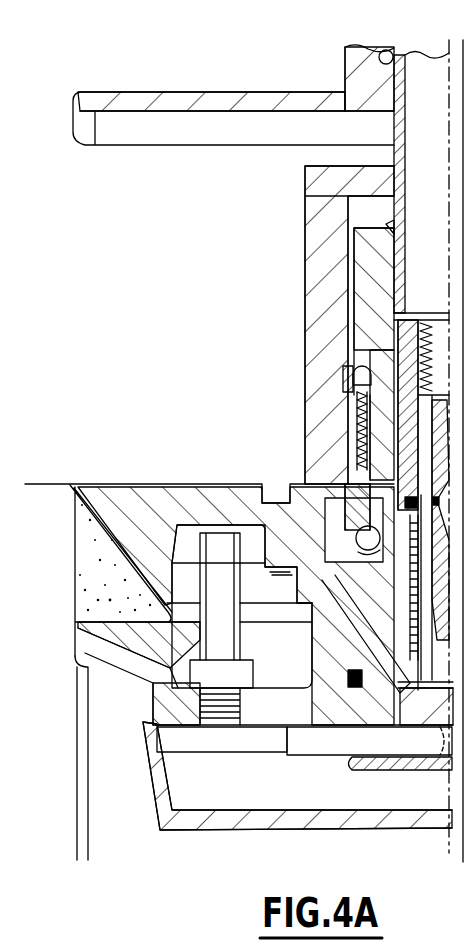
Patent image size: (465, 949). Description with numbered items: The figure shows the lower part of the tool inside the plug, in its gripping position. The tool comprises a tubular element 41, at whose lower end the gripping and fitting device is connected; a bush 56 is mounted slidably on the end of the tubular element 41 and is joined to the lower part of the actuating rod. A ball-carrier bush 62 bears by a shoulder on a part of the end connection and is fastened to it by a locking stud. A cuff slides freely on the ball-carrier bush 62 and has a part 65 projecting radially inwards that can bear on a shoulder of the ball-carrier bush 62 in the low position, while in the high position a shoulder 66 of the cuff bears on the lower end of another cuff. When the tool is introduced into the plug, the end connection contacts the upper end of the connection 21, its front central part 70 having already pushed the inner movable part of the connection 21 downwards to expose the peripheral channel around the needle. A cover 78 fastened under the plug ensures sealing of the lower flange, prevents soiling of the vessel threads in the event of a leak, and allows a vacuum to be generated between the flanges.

The tubular element 41 is at (376, 53).
The bush 56 is at (305, 242).
The shoulder 66 is at (353, 363).
The part 65 is at (350, 462).
The ball-carrier bush 62 is at (366, 490).
The connection 21 is at (312, 485).
The front central part 70 is at (312, 630).
The cover 78 is at (176, 824).